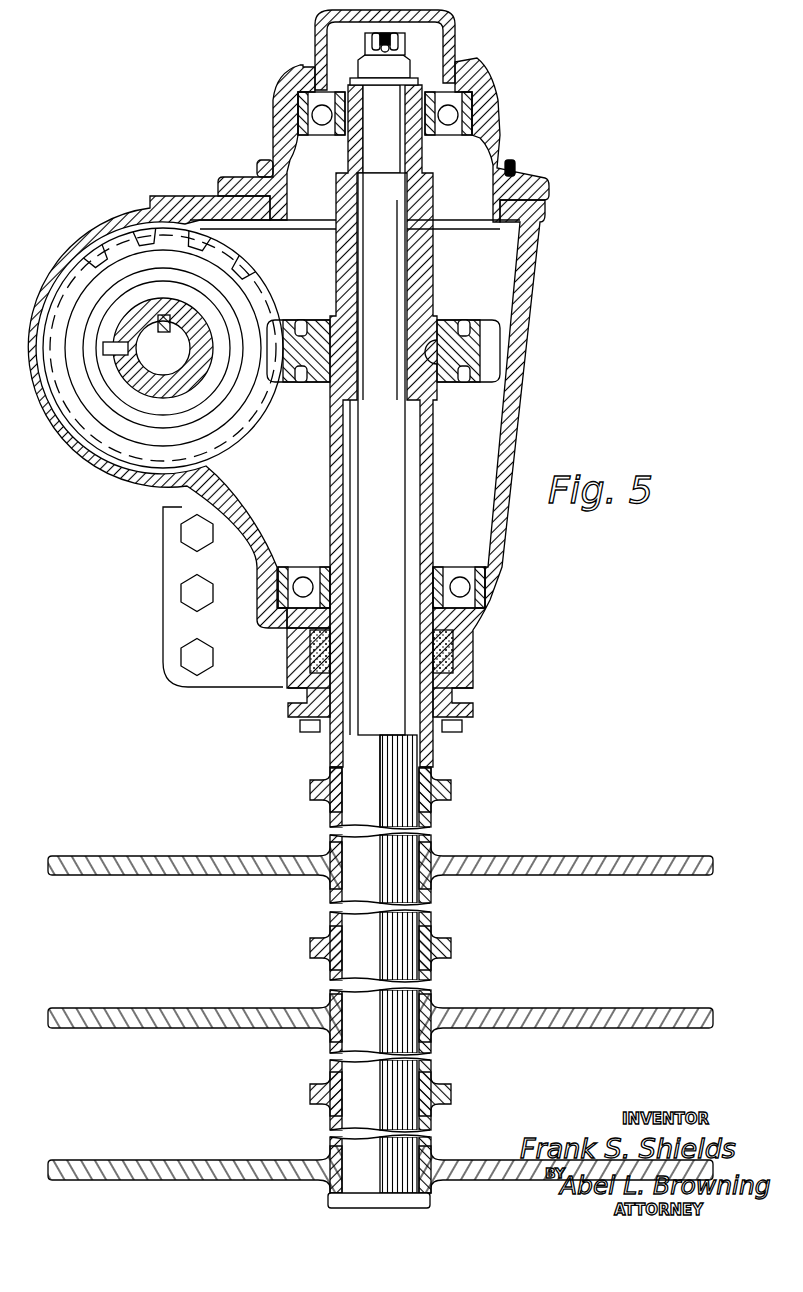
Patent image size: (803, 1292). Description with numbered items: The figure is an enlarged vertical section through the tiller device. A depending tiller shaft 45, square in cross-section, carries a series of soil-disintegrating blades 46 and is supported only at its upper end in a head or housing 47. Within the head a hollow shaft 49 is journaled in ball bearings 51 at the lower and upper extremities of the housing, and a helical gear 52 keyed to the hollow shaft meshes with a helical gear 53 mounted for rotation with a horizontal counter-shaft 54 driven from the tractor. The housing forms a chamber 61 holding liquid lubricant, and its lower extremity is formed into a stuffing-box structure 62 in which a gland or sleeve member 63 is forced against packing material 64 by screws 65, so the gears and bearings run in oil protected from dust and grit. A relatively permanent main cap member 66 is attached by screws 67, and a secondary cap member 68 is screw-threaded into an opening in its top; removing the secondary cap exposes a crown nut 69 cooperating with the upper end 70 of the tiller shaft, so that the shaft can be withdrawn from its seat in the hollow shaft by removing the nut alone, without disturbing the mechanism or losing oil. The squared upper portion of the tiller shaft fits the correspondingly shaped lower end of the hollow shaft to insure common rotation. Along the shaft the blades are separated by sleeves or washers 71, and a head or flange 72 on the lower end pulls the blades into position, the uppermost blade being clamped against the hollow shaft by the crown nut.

The tiller shaft 45 is at (398, 762).
The soil-disintegrating blades 46 is at (595, 870).
The head or housing 47 is at (520, 420).
The hollow shaft 49 is at (337, 447).
The ball bearings 51 is at (470, 100).
The helical gear 52 is at (495, 347).
The helical gear 53 is at (118, 262).
The horizontal counter-shaft 54 is at (168, 367).
The chamber 61 is at (182, 507).
The stuffing-box structure 62 is at (453, 660).
The gland or sleeve member 63 is at (452, 690).
The packing material 64 is at (317, 658).
The screws 65 is at (310, 732).
The main cap member 66 is at (493, 128).
The screws 67 is at (515, 167).
The secondary cap member 68 is at (315, 26).
The crown nut 69 is at (363, 58).
The upper end of the tiller shaft 70 is at (430, 33).
The sleeves or washers 71 is at (431, 903).
The head or flange 72 is at (328, 1200).